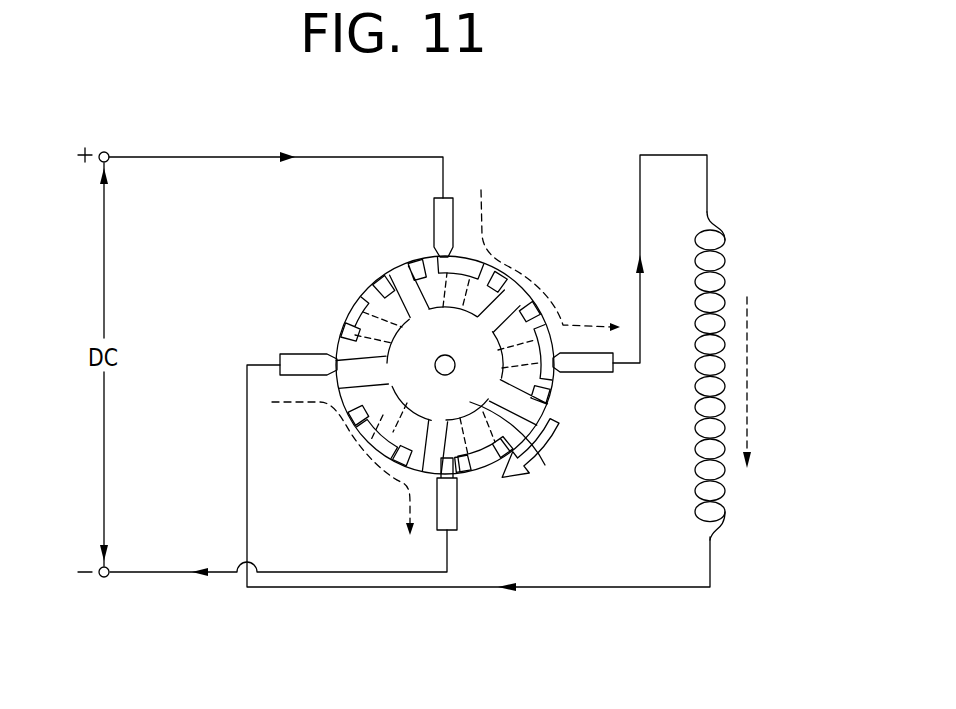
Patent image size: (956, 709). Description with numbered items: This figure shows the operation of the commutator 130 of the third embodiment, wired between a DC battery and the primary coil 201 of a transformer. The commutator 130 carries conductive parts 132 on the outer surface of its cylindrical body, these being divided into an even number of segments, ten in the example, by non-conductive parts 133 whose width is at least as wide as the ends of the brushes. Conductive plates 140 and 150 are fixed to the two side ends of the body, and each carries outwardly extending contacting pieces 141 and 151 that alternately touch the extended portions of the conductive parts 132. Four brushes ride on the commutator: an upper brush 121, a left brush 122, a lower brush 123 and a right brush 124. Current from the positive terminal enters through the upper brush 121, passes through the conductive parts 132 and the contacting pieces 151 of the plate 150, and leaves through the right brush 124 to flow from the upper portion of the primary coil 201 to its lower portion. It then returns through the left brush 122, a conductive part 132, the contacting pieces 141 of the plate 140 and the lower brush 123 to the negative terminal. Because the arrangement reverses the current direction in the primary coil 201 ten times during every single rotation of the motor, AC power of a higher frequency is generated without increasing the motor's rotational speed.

The upper brush 121 is at (453, 203).
The left brush 122 is at (288, 358).
The lower brush 123 is at (457, 520).
The right brush 124 is at (583, 372).
The commutator 130 is at (357, 441).
The conductive parts 132 is at (413, 263).
The non-conductive parts 133 is at (358, 282).
The plate 140 is at (552, 453).
The contacting pieces 141 is at (440, 445).
The plate 150 is at (520, 295).
The contacting pieces 151 is at (488, 253).
The primary coil 201 is at (697, 500).